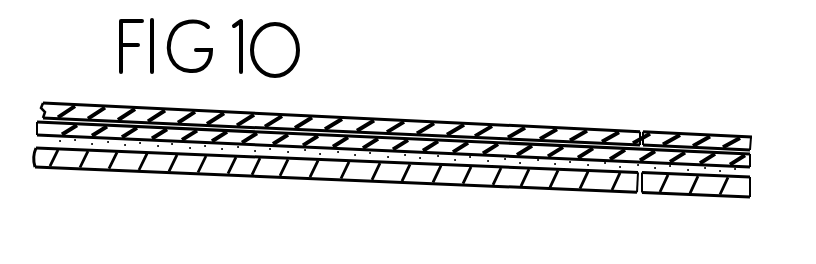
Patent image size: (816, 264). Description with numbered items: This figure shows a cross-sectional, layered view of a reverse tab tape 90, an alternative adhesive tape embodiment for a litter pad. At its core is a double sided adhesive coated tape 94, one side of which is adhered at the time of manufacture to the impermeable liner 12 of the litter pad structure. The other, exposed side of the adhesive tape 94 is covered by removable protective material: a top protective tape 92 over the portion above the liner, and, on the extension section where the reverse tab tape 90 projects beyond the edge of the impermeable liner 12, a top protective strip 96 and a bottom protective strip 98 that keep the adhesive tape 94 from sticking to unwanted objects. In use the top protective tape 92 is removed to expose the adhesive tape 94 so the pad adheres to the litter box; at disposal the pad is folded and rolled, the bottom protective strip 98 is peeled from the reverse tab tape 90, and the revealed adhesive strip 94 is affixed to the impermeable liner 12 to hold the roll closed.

The reverse tab tape 90 is at (614, 102).
The top protective tape 92 is at (283, 120).
The double sided adhesive coated tape 94 is at (322, 148).
The impermeable liner 12 is at (417, 176).
The top protective strip 96 is at (658, 137).
The bottom protective strip 98 is at (710, 190).